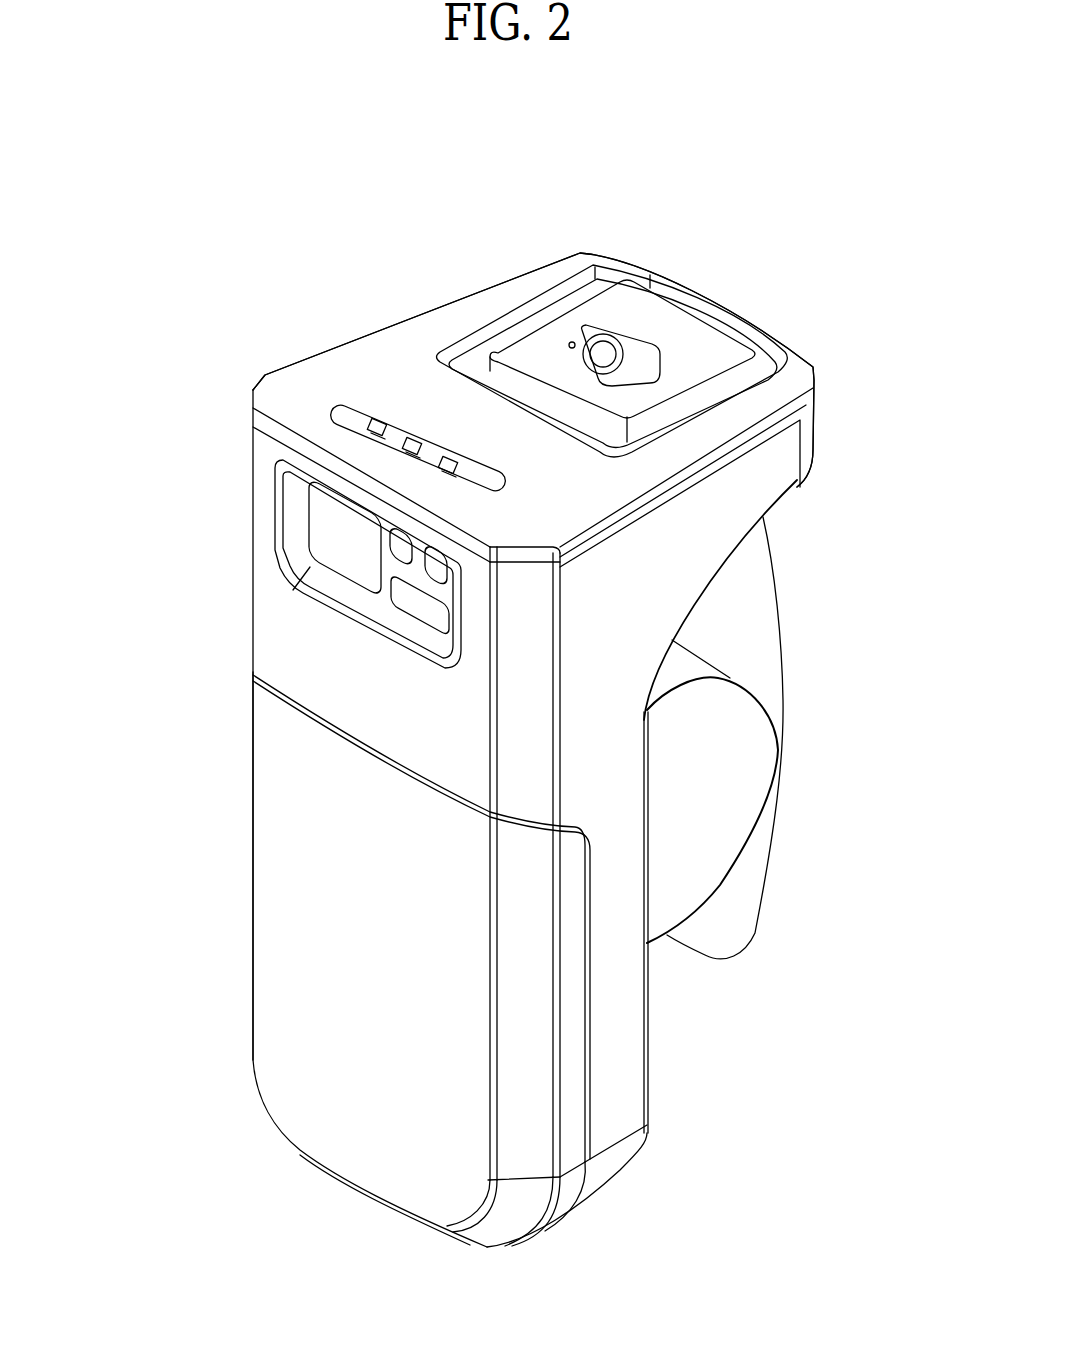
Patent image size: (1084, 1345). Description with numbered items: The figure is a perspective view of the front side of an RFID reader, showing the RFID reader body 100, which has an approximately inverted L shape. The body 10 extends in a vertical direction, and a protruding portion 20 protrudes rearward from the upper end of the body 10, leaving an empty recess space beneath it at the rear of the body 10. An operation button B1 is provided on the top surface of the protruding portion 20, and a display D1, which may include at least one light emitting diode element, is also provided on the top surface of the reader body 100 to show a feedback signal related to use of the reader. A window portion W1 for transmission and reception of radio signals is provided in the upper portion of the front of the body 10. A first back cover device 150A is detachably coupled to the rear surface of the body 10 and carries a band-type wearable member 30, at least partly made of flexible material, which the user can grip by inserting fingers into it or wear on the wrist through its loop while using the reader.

The RFID reader body 100 is at (219, 618).
The body 10 is at (303, 848).
The protruding portion 20 is at (770, 482).
The band-type wearable member 30 is at (815, 683).
The first back cover device 150A is at (675, 1003).
The operation button B1 is at (720, 342).
The display D1 is at (325, 386).
The window portion W1 is at (288, 528).